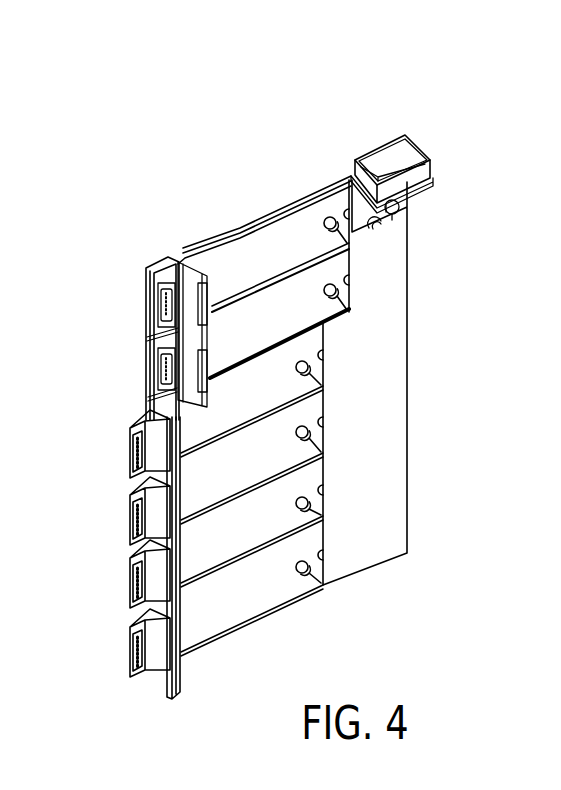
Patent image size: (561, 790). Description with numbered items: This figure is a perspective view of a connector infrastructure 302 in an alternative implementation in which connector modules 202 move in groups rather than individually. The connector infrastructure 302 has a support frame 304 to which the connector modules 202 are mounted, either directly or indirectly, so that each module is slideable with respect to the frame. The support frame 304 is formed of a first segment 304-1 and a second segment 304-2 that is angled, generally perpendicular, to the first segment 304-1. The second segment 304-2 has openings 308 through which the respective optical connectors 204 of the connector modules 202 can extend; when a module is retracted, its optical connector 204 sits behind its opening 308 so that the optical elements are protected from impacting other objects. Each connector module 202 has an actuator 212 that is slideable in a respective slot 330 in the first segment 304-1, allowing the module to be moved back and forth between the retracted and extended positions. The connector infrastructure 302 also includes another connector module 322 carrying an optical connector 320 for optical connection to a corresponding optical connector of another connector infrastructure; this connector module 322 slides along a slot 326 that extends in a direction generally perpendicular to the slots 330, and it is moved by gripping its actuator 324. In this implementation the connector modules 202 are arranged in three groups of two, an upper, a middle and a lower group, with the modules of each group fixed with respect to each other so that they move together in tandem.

The connector infrastructure 302 is at (467, 118).
The connector module 202 is at (285, 310).
The optical connector 204 is at (175, 283).
The actuator 212 is at (342, 298).
The support frame 304 is at (386, 358).
The first segment 304-1 is at (207, 238).
The second segment 304-2 is at (162, 283).
The opening 308 is at (147, 397).
The optical connector 320 is at (413, 150).
The connector module 322 is at (403, 205).
The actuator 324 is at (386, 214).
The slot 326 is at (378, 229).
The slot 330 is at (328, 356).